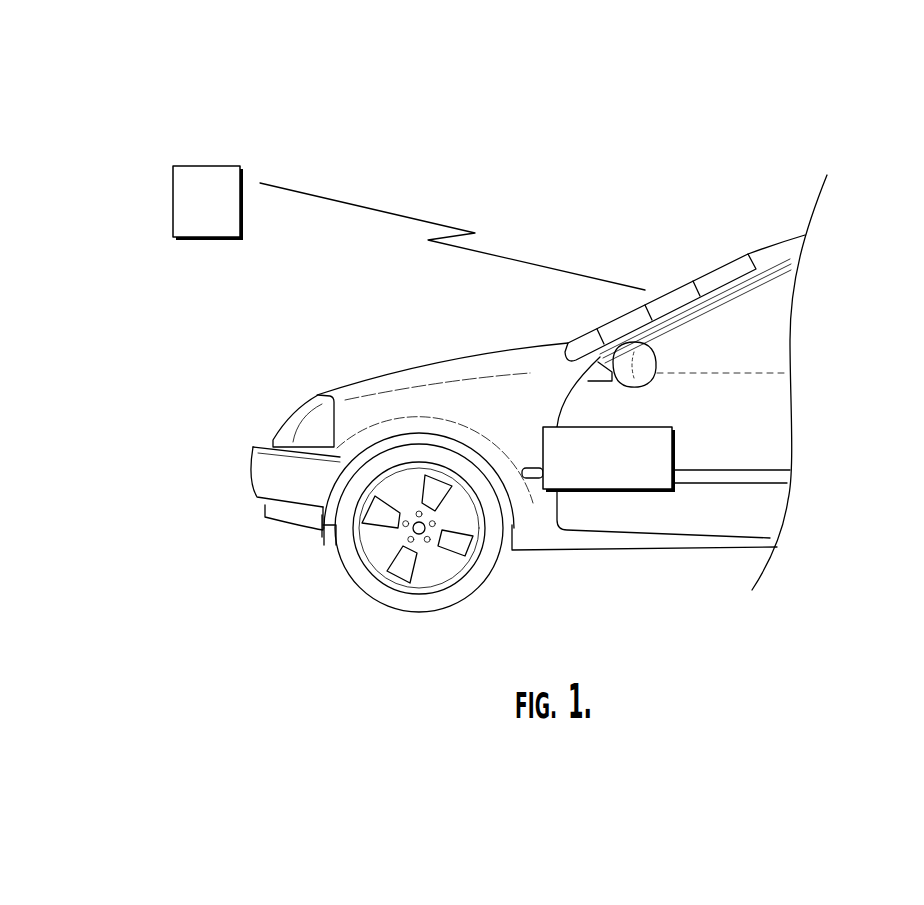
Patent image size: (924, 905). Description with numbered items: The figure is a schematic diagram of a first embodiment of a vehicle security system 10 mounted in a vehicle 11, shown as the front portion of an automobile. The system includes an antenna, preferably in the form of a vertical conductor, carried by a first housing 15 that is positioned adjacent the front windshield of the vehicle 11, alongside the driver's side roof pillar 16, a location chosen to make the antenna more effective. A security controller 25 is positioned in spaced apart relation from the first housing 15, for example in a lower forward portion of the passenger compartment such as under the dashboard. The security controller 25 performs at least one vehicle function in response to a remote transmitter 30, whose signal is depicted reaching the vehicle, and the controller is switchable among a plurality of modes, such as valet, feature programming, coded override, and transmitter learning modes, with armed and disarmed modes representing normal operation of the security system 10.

The vehicle security system 10 is at (633, 192).
The vehicle 11 is at (352, 373).
The first housing 15 is at (690, 297).
The roof pillar 16 is at (677, 306).
The security controller 25 is at (690, 452).
The remote transmitter 30 is at (222, 166).